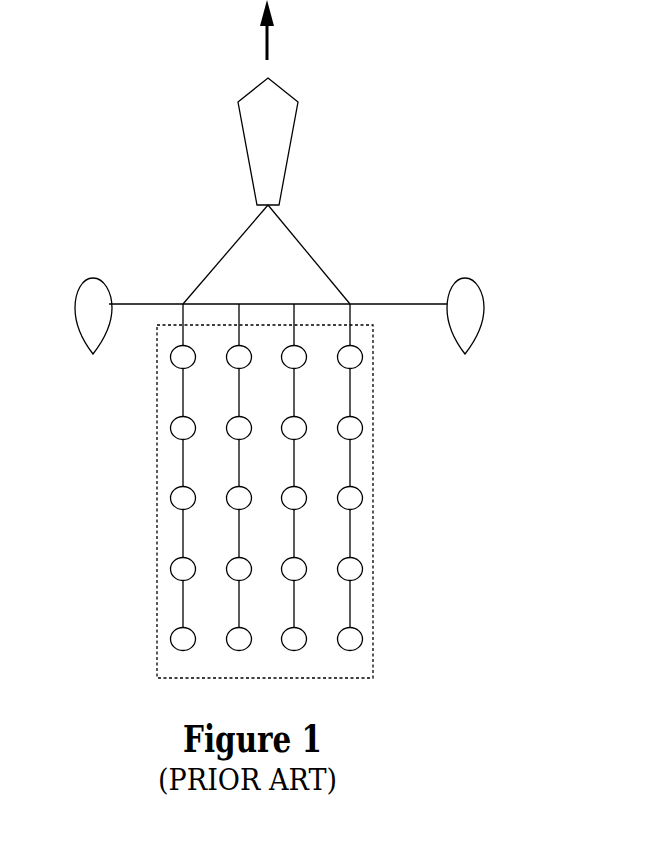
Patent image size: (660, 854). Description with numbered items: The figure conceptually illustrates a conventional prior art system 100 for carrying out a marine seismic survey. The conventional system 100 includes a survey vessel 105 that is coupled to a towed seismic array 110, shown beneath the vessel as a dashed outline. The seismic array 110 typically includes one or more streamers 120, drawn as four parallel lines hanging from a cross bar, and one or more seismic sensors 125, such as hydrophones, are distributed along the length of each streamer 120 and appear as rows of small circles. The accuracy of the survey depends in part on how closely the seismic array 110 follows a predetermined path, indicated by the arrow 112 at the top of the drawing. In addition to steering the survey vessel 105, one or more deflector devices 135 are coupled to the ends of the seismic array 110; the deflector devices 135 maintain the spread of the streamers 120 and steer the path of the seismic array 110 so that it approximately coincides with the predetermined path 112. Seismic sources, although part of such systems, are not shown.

The conventional system 100 is at (500, 120).
The survey vessel 105 is at (286, 166).
The seismic array 110 is at (373, 665).
The arrow indicating predetermined path 112 is at (268, 42).
The streamers 120 is at (350, 462).
The seismic sensors 125 is at (363, 570).
The deflector devices 135 is at (93, 278).